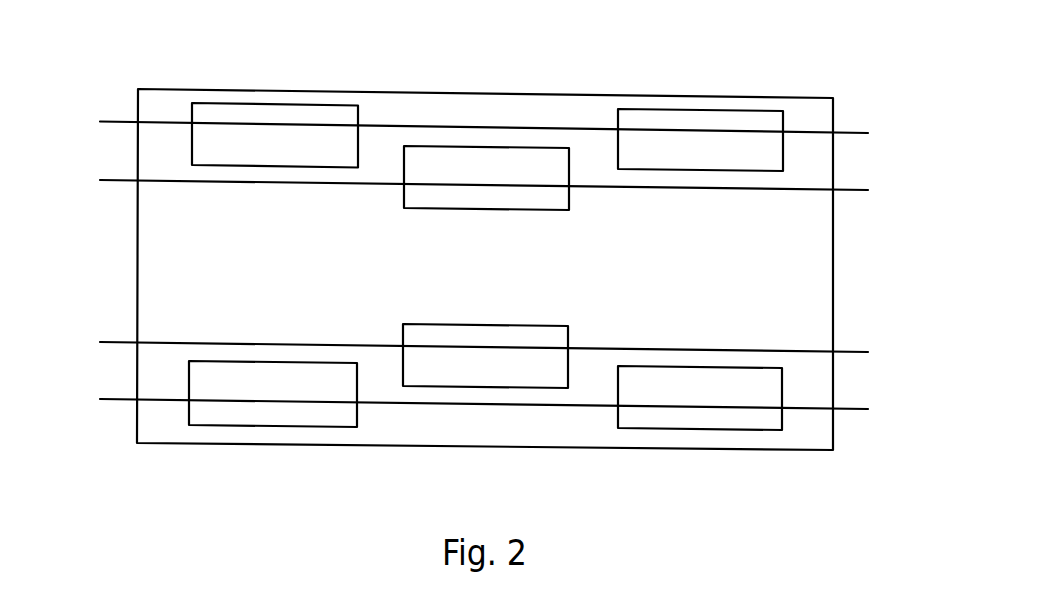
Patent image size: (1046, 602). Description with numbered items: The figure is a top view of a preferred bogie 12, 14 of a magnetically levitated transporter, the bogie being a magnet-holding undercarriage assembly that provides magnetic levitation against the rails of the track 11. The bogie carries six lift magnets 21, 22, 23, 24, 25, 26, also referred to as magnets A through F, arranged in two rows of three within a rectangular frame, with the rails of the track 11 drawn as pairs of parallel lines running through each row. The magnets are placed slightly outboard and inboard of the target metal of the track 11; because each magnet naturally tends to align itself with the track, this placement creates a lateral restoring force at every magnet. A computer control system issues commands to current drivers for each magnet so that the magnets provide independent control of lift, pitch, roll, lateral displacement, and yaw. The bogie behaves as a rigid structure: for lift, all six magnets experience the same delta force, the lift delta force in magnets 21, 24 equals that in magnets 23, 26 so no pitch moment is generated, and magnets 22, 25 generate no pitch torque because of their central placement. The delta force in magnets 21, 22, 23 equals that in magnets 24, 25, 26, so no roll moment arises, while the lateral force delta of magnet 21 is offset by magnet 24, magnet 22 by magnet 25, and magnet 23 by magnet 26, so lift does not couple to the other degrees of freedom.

The track 11 is at (878, 159).
The bogie 12 is at (447, 269).
The bogie 14 is at (137, 224).
The lift magnet 21 is at (655, 109).
The lift magnet 22 is at (475, 146).
The lift magnet 23 is at (250, 103).
The lift magnet 24 is at (653, 430).
The lift magnet 25 is at (473, 388).
The lift magnet 26 is at (249, 426).